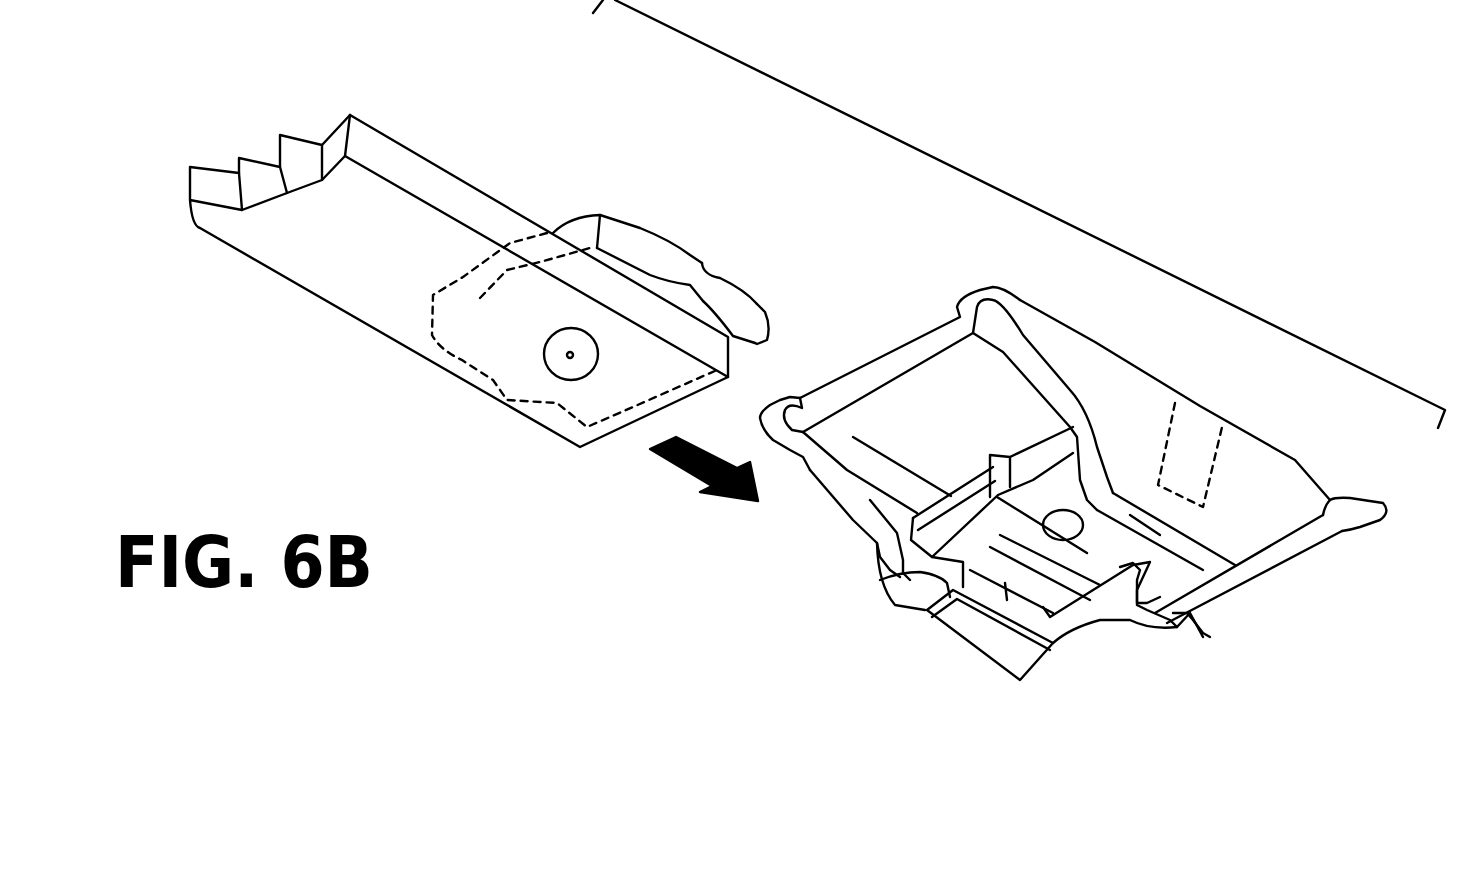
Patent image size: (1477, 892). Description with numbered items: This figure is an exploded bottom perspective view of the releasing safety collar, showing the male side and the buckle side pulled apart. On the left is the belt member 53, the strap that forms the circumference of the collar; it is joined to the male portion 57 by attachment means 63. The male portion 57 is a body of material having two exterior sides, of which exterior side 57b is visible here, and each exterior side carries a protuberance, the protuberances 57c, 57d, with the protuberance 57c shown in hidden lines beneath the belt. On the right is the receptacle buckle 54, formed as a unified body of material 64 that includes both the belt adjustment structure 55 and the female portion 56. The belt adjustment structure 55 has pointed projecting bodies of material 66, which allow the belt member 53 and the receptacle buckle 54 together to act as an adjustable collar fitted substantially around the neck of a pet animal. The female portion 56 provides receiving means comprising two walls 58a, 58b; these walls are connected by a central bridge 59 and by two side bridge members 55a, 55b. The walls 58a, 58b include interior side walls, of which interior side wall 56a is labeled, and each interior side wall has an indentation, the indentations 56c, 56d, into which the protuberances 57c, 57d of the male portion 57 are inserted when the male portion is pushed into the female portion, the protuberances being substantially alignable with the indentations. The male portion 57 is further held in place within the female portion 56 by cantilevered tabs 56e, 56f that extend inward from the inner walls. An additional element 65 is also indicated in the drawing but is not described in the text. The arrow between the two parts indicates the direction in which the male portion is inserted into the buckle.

The belt member 53 is at (371, 300).
The receptacle buckle 54 is at (1005, 193).
The belt adjustment structure 55 is at (1313, 531).
The side bridge member 55a is at (913, 353).
The side bridge member 55b is at (1290, 553).
The female portion 56 is at (930, 585).
The interior side wall 56a is at (925, 608).
The indentation 56c is at (1063, 643).
The indentation 56d is at (1183, 478).
The cantilevered tab 56e is at (1060, 640).
The cantilevered tab 56f is at (1190, 613).
The male portion 57 is at (581, 232).
The exterior side 57b is at (743, 311).
The protuberance 57c is at (492, 392).
The protuberance 57d is at (702, 266).
The wall 58a is at (984, 646).
The wall 58b is at (1240, 458).
The central bridge 59 is at (1039, 453).
The attachment means 63 is at (572, 372).
The unified body of material 64 is at (1167, 647).
The post 65 is at (993, 460).
The pointed projecting body of material 66 is at (1190, 614).